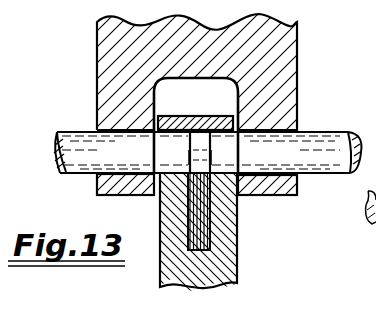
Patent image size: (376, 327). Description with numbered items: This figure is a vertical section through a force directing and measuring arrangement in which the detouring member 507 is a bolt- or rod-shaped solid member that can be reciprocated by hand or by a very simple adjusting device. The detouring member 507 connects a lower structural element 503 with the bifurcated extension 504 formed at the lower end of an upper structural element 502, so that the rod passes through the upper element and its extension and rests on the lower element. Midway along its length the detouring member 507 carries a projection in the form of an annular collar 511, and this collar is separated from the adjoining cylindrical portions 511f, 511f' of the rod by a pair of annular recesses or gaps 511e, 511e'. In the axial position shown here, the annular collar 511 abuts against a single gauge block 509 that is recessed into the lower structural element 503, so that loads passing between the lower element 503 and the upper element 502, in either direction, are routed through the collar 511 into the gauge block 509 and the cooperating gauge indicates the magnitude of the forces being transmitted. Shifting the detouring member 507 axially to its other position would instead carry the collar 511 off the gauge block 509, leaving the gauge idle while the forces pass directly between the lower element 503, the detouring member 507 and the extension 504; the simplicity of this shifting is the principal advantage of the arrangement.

The upper structural element 502 is at (302, 51).
The lower structural element 503 is at (226, 294).
The bifurcated extension 504 is at (106, 186).
The detouring member 507 is at (328, 180).
The gauge block 509 is at (206, 241).
The annular collar 511 is at (197, 250).
The annular recess 511e is at (265, 192).
The annular recess 511e' is at (146, 230).
The cylindrical portion 511f is at (332, 121).
The cylindrical portion 511f' is at (74, 111).